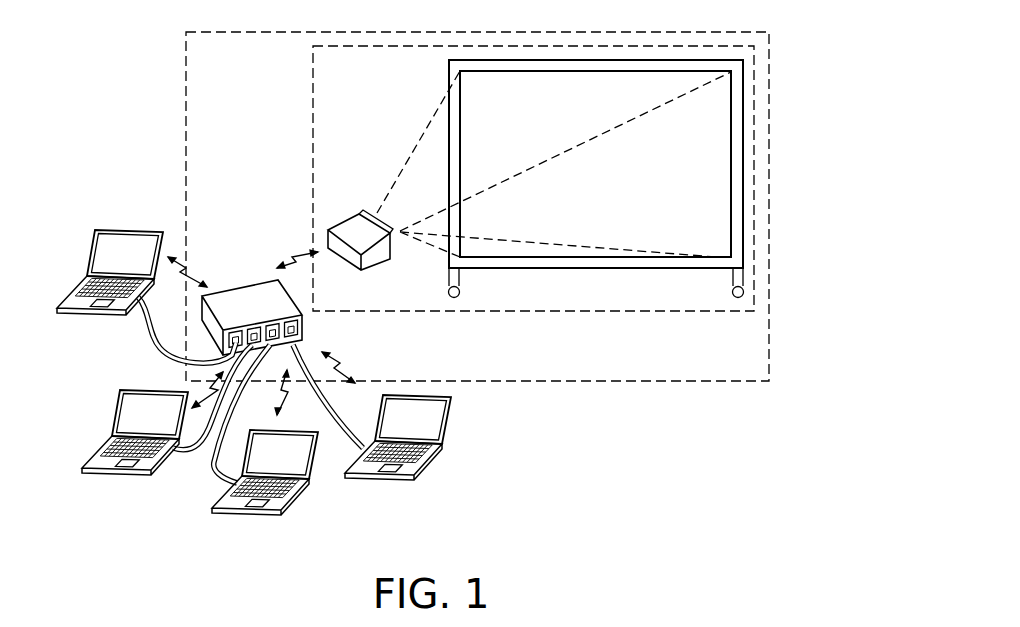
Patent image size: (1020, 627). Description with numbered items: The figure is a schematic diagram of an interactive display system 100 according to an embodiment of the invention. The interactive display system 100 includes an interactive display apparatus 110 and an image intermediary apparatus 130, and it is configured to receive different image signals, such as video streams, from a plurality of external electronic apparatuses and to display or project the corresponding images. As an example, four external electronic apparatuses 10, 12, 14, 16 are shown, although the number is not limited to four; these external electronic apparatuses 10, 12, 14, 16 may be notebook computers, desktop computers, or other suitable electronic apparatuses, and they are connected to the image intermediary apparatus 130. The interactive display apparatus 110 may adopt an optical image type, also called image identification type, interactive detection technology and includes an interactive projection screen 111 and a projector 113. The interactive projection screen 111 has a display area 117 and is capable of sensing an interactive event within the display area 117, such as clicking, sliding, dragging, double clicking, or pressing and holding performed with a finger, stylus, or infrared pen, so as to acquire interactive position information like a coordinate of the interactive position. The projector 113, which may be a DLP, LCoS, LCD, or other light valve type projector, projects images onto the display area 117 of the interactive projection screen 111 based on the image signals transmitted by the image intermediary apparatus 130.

The interactive display system 100 is at (665, 381).
The interactive display apparatus 110 is at (612, 312).
The interactive projection screen 111 is at (744, 173).
The display area 117 is at (733, 123).
The projector 113 is at (348, 217).
The image intermediary apparatus 130 is at (252, 282).
The external electronic apparatus 10 is at (125, 232).
The external electronic apparatus 12 is at (138, 390).
The external electronic apparatus 14 is at (250, 516).
The external electronic apparatus 16 is at (432, 457).